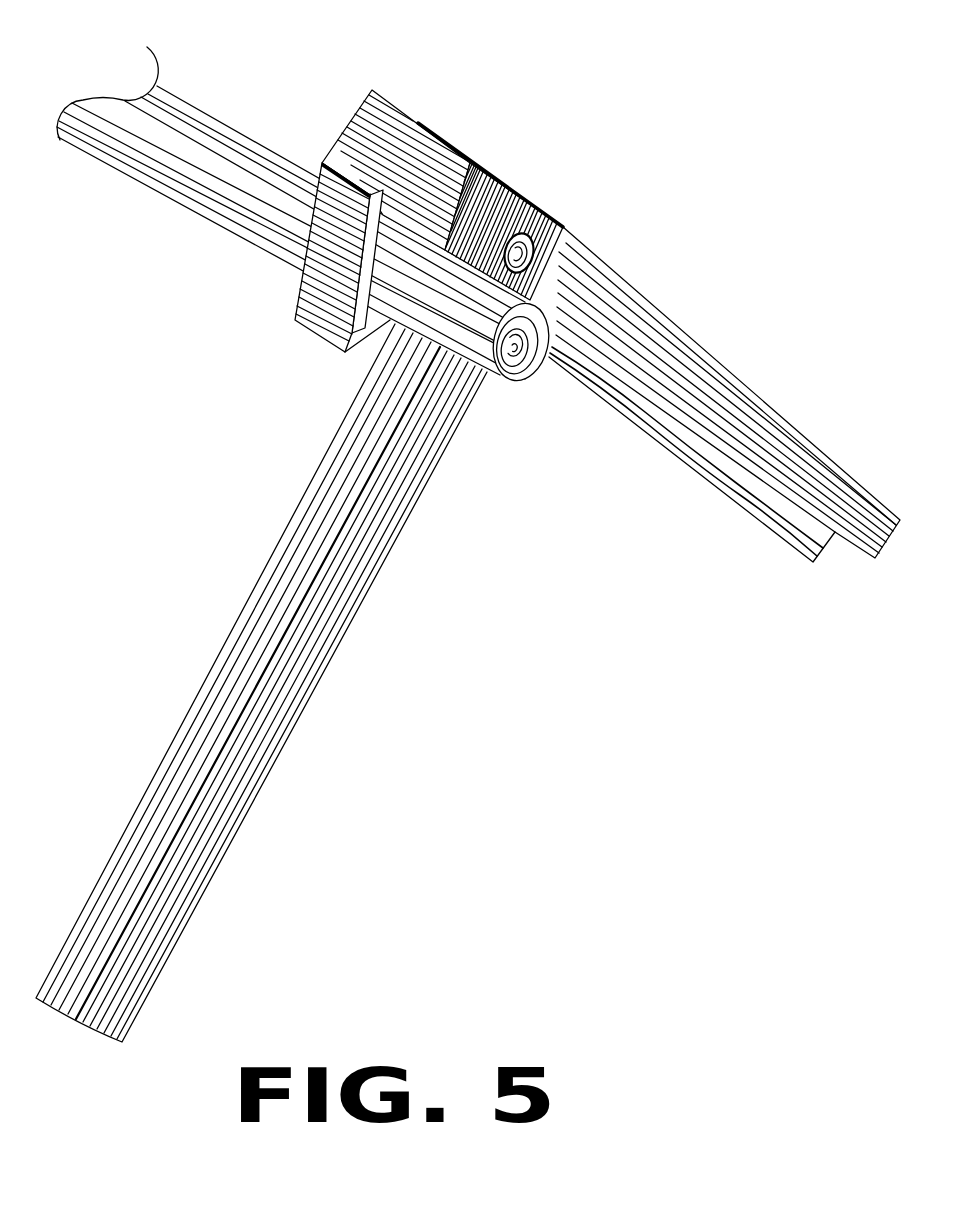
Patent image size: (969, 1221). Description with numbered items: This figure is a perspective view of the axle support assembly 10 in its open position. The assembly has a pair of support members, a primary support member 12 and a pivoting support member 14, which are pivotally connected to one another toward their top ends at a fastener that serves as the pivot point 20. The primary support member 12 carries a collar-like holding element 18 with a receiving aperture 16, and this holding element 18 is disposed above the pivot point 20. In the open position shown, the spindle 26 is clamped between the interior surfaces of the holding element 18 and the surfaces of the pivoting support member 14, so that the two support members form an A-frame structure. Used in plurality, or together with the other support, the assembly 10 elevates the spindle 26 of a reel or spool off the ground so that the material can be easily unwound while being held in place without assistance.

The axle support assembly 10 is at (468, 525).
The primary support member 12 is at (671, 377).
The pivoting support member 14 is at (210, 738).
The receiving aperture 16 is at (387, 213).
The holding element 18 is at (336, 320).
The pivot point 20 is at (522, 233).
The spindle 26 is at (263, 200).